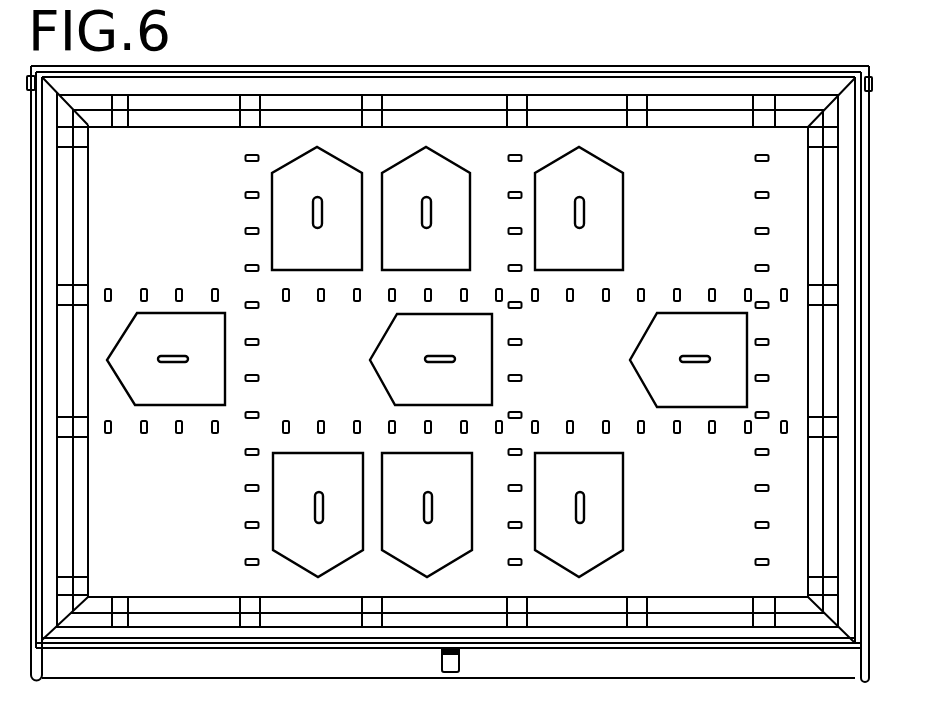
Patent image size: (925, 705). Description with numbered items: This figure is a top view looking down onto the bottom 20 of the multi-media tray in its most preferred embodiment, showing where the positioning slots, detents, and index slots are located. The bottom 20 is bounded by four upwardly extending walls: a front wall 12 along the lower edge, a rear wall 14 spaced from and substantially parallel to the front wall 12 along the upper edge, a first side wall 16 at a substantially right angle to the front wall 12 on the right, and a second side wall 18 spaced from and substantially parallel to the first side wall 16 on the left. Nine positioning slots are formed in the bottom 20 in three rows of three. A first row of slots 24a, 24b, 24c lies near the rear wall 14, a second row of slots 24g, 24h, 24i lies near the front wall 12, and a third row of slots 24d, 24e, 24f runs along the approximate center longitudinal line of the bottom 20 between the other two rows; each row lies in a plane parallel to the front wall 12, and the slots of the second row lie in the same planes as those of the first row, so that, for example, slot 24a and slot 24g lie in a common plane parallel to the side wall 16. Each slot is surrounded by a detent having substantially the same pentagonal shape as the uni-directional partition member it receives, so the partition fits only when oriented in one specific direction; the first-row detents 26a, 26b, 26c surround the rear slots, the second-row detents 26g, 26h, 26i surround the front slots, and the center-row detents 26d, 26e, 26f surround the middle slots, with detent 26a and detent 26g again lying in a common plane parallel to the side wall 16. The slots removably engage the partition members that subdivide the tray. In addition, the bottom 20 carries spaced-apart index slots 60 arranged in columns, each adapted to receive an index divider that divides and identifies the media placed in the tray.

The front wall 12 is at (170, 597).
The rear wall 14 is at (663, 128).
The first side wall 16 is at (807, 202).
The second side wall 18 is at (88, 520).
The bottom 20 is at (591, 367).
The index slots 60 is at (108, 287).
The positioning slot 24a is at (322, 205).
The positioning slot 24b is at (431, 205).
The positioning slot 24c is at (584, 205).
The positioning slot 24d is at (188, 359).
The positioning slot 24e is at (455, 359).
The positioning slot 24f is at (710, 359).
The positioning slot 24g is at (323, 502).
The positioning slot 24h is at (432, 502).
The positioning slot 24i is at (584, 502).
The detent 26a is at (288, 185).
The detent 26b is at (397, 185).
The detent 26c is at (550, 185).
The detent 26d is at (143, 342).
The detent 26e is at (410, 342).
The detent 26f is at (665, 342).
The detent 26g is at (293, 483).
The detent 26h is at (402, 483).
The detent 26i is at (554, 483).